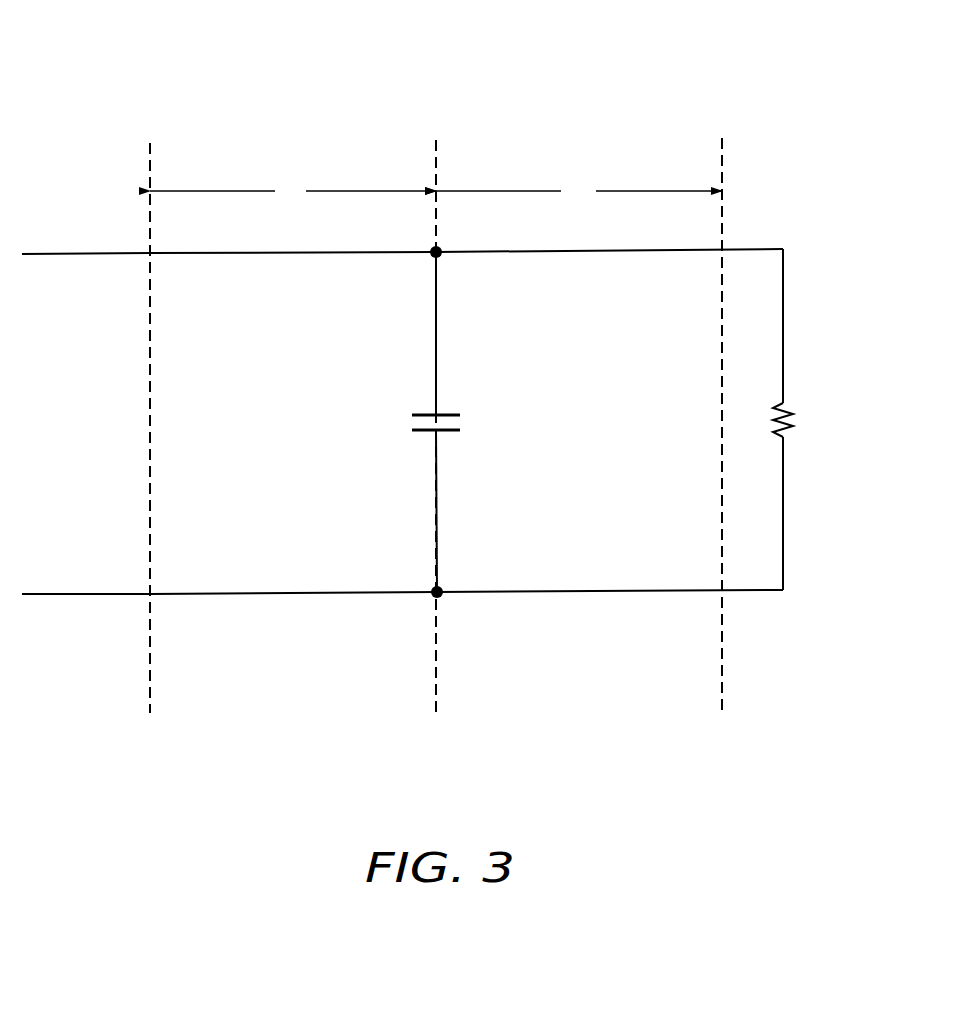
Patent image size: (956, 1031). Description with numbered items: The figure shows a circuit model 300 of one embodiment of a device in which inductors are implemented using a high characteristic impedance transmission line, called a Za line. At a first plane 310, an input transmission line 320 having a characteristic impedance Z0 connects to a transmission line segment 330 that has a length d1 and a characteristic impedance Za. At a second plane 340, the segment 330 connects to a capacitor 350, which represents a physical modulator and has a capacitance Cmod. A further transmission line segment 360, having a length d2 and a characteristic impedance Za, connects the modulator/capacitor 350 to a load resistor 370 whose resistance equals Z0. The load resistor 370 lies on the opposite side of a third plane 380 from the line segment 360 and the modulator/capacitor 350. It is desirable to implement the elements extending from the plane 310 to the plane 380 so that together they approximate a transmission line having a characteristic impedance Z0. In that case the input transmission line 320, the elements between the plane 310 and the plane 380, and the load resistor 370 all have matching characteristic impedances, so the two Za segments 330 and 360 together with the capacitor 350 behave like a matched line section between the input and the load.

The circuit model 300 is at (228, 54).
The plane 310 is at (155, 662).
The input transmission line 320 is at (85, 252).
The transmission line segment 330 is at (276, 256).
The plane 340 is at (441, 676).
The capacitor 350 is at (446, 433).
The transmission line segment 360 is at (618, 252).
The load resistor 370 is at (796, 421).
The plane 380 is at (727, 660).